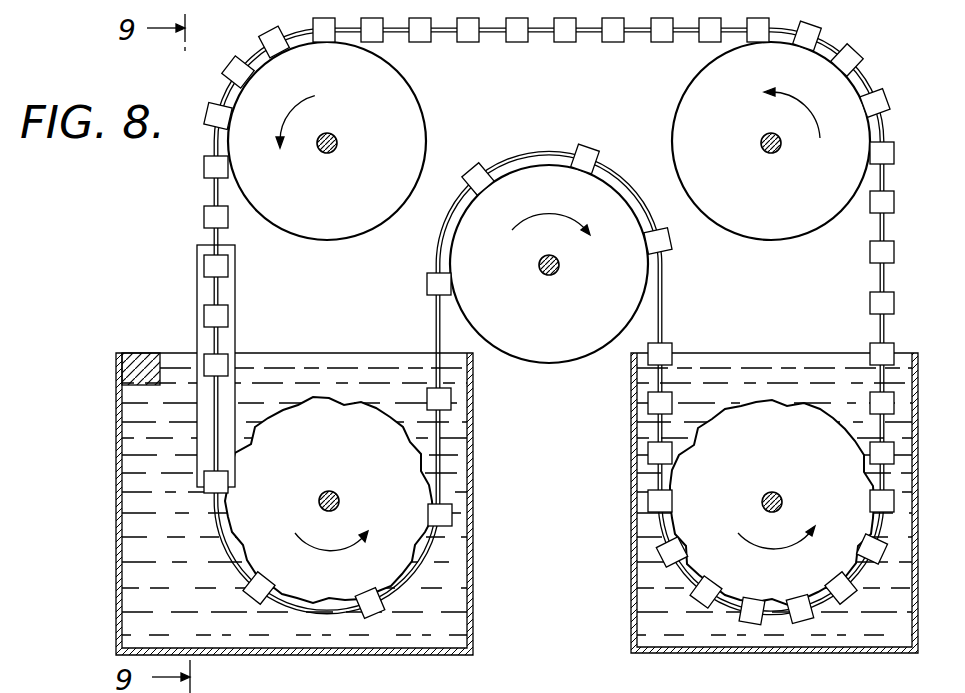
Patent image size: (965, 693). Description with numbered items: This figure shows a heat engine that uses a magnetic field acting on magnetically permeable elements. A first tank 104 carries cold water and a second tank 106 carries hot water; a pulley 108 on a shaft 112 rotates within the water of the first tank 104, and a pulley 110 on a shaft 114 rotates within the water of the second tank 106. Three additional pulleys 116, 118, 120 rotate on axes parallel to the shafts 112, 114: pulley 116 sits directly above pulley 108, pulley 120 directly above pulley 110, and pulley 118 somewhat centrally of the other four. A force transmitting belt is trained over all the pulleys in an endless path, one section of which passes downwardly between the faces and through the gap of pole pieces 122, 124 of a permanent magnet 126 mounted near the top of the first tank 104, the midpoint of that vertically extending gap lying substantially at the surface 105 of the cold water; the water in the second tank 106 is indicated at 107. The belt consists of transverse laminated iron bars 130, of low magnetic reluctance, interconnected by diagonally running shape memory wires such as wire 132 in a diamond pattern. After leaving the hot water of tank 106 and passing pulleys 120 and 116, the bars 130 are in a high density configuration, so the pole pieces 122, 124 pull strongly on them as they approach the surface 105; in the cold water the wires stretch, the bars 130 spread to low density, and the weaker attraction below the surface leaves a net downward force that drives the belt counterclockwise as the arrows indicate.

The first tank 104 is at (473, 578).
The surface of the water 105 is at (333, 368).
The second tank 106 is at (631, 605).
The treating liquid in second tank 107 is at (782, 368).
The pulley 108 is at (350, 455).
The pulley 110 is at (790, 590).
The shaft 112 is at (318, 497).
The shaft 114 is at (771, 491).
The pulley 116 is at (418, 108).
The pulley 118 is at (533, 362).
The pulley 120 is at (680, 100).
The pole piece 122 is at (197, 280).
The pole piece 124 is at (726, 685).
The permanent magnet 126 is at (135, 353).
The laminated iron bars 130 is at (205, 215).
The shape memory wire 132 is at (214, 239).